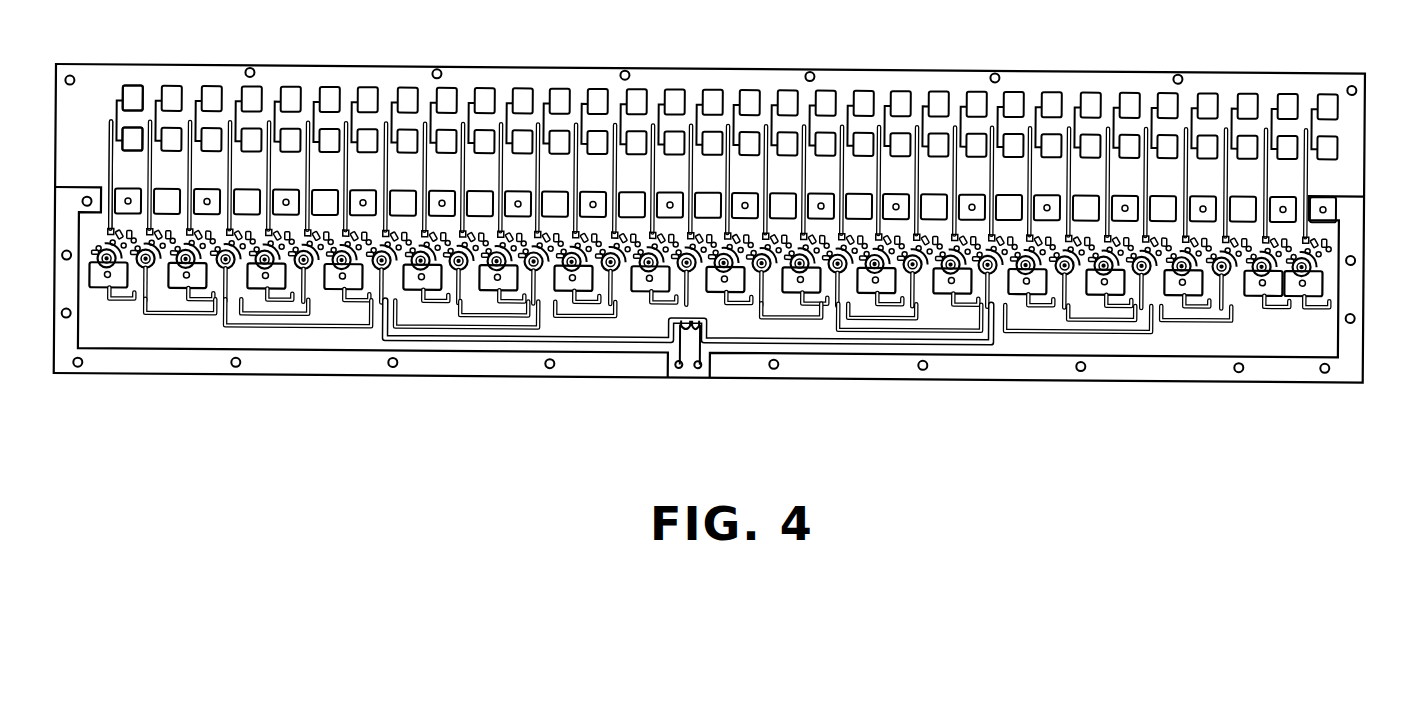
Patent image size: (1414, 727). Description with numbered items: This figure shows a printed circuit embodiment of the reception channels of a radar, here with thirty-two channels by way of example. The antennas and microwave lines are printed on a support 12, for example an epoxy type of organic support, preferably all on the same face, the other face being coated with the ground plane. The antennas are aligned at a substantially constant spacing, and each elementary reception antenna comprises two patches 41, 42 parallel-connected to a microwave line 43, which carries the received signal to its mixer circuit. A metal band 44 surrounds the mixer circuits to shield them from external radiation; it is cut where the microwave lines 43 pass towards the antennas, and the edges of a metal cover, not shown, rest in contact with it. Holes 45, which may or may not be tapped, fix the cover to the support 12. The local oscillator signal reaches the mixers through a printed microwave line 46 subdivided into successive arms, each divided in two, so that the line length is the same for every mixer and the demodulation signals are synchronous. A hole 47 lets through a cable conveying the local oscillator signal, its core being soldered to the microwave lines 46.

The support 12 is at (1365, 165).
The patch 41 is at (137, 90).
The patch 42 is at (132, 140).
The microwave line 43 is at (108, 162).
The metal band 44 is at (400, 200).
The holes 45 is at (893, 203).
The printed microwave line 46 is at (672, 362).
The hole 47 is at (682, 368).